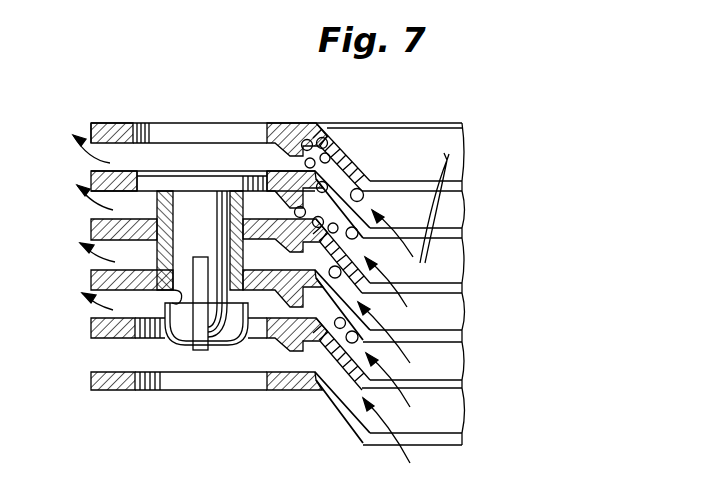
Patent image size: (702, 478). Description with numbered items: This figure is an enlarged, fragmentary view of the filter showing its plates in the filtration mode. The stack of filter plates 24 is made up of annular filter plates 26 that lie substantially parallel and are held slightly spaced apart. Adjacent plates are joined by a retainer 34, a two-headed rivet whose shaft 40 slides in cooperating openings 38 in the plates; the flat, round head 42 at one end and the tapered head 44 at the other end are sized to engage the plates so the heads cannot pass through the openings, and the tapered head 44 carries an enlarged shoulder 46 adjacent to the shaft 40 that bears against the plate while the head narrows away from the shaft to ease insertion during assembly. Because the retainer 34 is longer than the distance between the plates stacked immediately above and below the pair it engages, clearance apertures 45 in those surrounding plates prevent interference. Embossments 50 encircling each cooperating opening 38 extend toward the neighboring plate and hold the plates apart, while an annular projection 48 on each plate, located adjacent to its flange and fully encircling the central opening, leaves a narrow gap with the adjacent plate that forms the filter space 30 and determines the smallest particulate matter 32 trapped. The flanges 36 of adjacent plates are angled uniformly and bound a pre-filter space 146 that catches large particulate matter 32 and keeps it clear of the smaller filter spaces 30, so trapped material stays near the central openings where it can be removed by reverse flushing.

The stack of filter plates 24 is at (123, 116).
The annular filter plate 26 is at (100, 150).
The clearance aperture 45 is at (160, 411).
The filter space 30 is at (292, 163).
The annular projection 48 is at (293, 152).
The particulate matter 32 is at (322, 152).
The flange 36 is at (372, 198).
The pre-filter space 146 is at (374, 192).
The cooperating opening 38 is at (177, 170).
The flat round head 42 is at (204, 183).
The retainer 34 is at (100, 231).
The embossment 50 is at (157, 203).
The shaft 40 is at (213, 242).
The enlarged shoulder 46 is at (230, 304).
The tapered head 44 is at (187, 330).